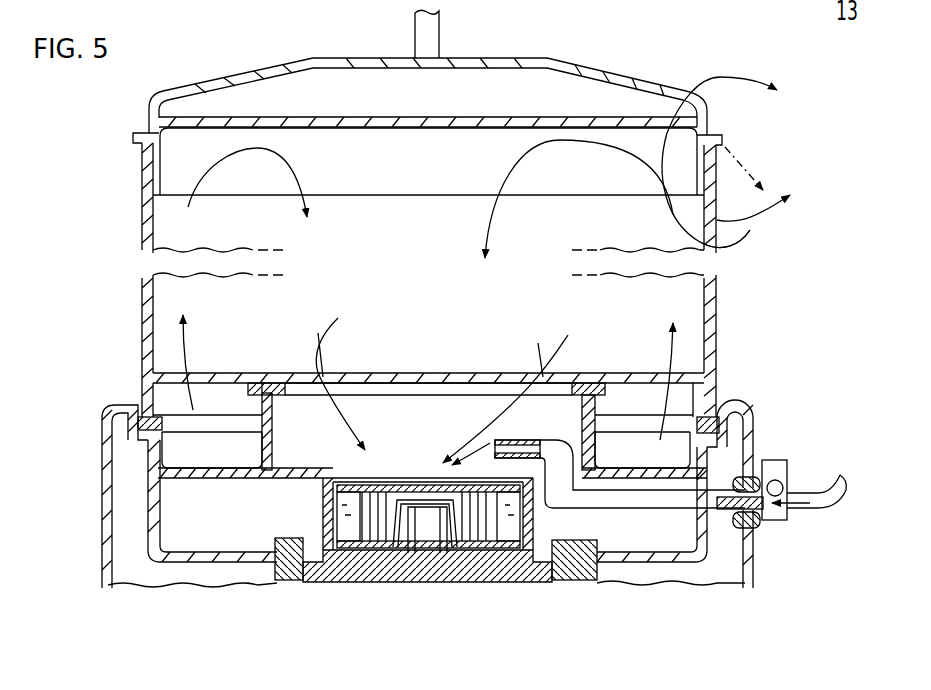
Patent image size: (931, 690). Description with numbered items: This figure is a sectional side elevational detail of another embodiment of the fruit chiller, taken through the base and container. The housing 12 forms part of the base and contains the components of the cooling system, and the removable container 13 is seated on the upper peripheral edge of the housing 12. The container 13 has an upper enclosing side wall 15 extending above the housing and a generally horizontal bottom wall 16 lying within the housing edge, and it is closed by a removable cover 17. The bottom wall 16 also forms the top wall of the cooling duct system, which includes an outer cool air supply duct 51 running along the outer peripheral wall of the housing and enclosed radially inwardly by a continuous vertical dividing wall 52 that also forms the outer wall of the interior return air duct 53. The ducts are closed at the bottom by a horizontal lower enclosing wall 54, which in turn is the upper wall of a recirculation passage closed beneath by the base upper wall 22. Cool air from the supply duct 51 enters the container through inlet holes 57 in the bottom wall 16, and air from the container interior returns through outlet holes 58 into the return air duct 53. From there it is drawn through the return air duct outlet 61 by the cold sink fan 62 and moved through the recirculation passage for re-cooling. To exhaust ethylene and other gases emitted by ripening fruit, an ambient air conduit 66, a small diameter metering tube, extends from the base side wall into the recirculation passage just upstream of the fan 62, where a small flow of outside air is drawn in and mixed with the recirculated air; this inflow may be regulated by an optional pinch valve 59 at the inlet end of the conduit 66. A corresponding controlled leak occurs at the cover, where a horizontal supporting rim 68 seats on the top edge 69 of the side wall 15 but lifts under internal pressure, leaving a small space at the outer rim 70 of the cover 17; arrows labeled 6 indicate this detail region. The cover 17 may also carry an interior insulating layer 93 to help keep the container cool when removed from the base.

The section/view direction arrows 6 is at (736, 149).
The housing 12 is at (747, 420).
The container 13 is at (720, 327).
The upper enclosing side wall 15 is at (142, 323).
The bottom wall 16 is at (428, 370).
The cover 17 is at (620, 77).
The base upper wall 22 is at (197, 557).
The cool air supply duct 51 is at (232, 398).
The dividing wall 52 is at (277, 460).
The return air duct 53 is at (483, 407).
The lower enclosing wall 54 is at (305, 470).
The inlet holes 57 is at (195, 373).
The outlet holes 58 is at (447, 378).
The pinch valve 59 is at (777, 460).
The return air duct outlet 61 is at (395, 480).
The cold sink fan 62 is at (428, 550).
The ambient air conduit 66 is at (648, 502).
The horizontal supporting rim 68 is at (700, 143).
The top edge 69 is at (741, 222).
The outer rim 70 is at (668, 163).
The interior insulating layer 93 is at (437, 123).